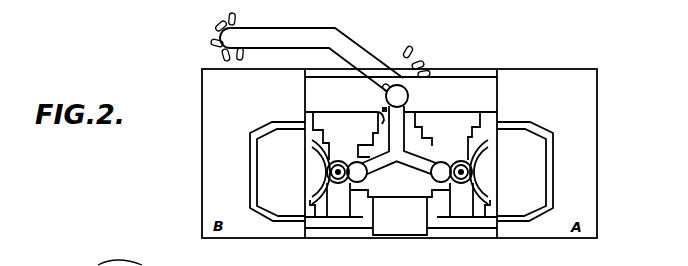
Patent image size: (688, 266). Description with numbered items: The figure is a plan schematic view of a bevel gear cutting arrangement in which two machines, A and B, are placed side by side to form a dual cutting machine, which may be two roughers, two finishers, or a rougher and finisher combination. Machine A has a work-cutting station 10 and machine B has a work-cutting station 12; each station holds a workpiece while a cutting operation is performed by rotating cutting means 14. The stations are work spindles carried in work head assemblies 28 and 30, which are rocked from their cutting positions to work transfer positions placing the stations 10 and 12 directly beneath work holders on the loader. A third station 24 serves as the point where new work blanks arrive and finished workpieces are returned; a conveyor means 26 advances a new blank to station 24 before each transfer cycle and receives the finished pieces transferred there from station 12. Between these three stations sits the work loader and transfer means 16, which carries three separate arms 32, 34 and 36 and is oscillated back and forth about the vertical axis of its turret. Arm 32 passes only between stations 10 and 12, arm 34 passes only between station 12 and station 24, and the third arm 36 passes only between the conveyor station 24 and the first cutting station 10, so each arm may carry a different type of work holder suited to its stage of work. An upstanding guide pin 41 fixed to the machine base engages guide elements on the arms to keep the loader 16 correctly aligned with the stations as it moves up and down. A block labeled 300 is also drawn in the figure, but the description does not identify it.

The conveyor means 26 is at (371, 37).
The third station 24 is at (416, 104).
The guide pin 41 is at (384, 108).
The third arm 36 is at (377, 117).
The work head assembly 30 is at (356, 136).
The work head assembly 28 is at (459, 136).
The arm 32 is at (429, 152).
The arm 34 is at (384, 166).
The work loader and transfer means 16 is at (402, 169).
The cutting means 14 is at (328, 171).
The work-cutting station 12 is at (341, 182).
The work-cutting station 10 is at (464, 184).
The base block 300 is at (414, 219).